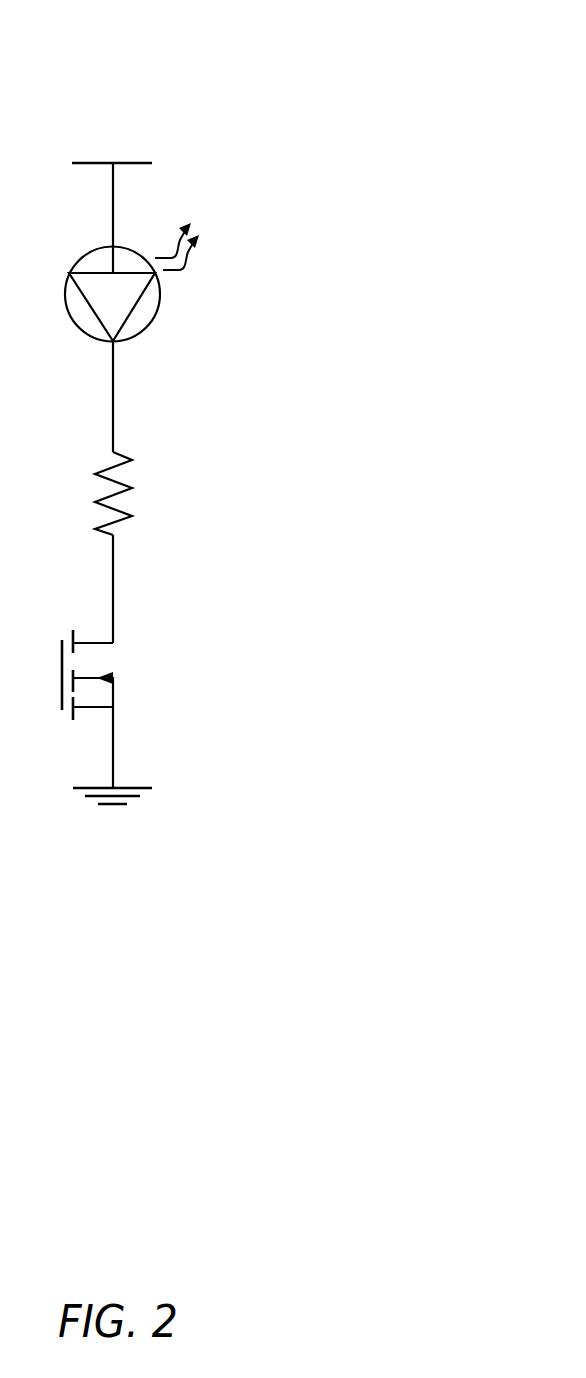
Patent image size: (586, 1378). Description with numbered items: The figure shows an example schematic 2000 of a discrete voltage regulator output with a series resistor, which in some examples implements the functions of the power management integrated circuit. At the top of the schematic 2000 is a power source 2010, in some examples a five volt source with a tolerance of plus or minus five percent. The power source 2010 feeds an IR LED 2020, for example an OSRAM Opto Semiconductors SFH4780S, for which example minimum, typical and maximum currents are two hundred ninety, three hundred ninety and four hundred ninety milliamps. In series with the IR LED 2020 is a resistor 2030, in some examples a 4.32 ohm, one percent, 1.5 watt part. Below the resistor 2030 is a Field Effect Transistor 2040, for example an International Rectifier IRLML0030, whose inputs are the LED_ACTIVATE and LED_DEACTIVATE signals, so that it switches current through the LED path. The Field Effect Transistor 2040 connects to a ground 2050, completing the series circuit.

The schematic 2000 is at (357, 50).
The power source 2010 is at (204, 130).
The IR LED 2020 is at (239, 250).
The resistor 2030 is at (146, 479).
The Field Effect Transistor 2040 is at (134, 674).
The ground 2050 is at (169, 779).